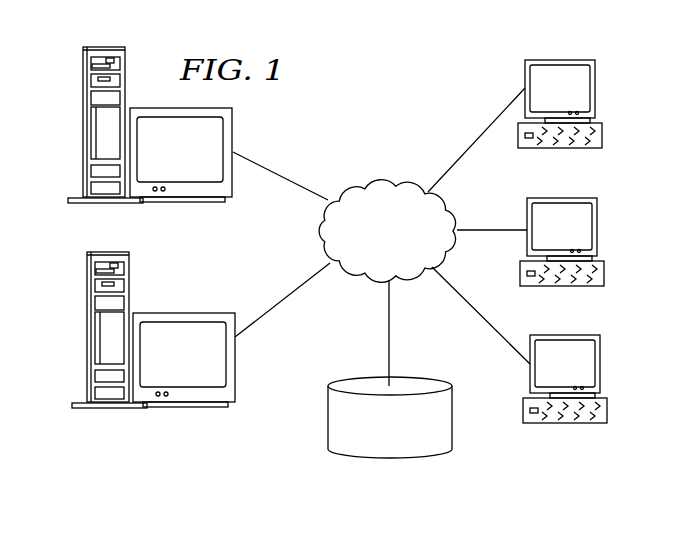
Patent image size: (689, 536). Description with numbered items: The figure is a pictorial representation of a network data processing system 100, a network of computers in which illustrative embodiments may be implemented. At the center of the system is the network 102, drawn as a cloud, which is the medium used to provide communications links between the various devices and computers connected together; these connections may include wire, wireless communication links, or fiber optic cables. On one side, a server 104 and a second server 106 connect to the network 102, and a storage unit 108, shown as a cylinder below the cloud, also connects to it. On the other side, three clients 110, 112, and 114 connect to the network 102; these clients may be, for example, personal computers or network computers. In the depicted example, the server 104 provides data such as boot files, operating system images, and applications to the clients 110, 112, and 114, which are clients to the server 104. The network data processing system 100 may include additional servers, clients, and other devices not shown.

The network data processing system 100 is at (440, 65).
The network 102 is at (360, 184).
The server 104 is at (83, 127).
The server 106 is at (88, 333).
The storage unit 108 is at (373, 458).
The client 110 is at (595, 88).
The client 112 is at (598, 228).
The client 114 is at (600, 365).